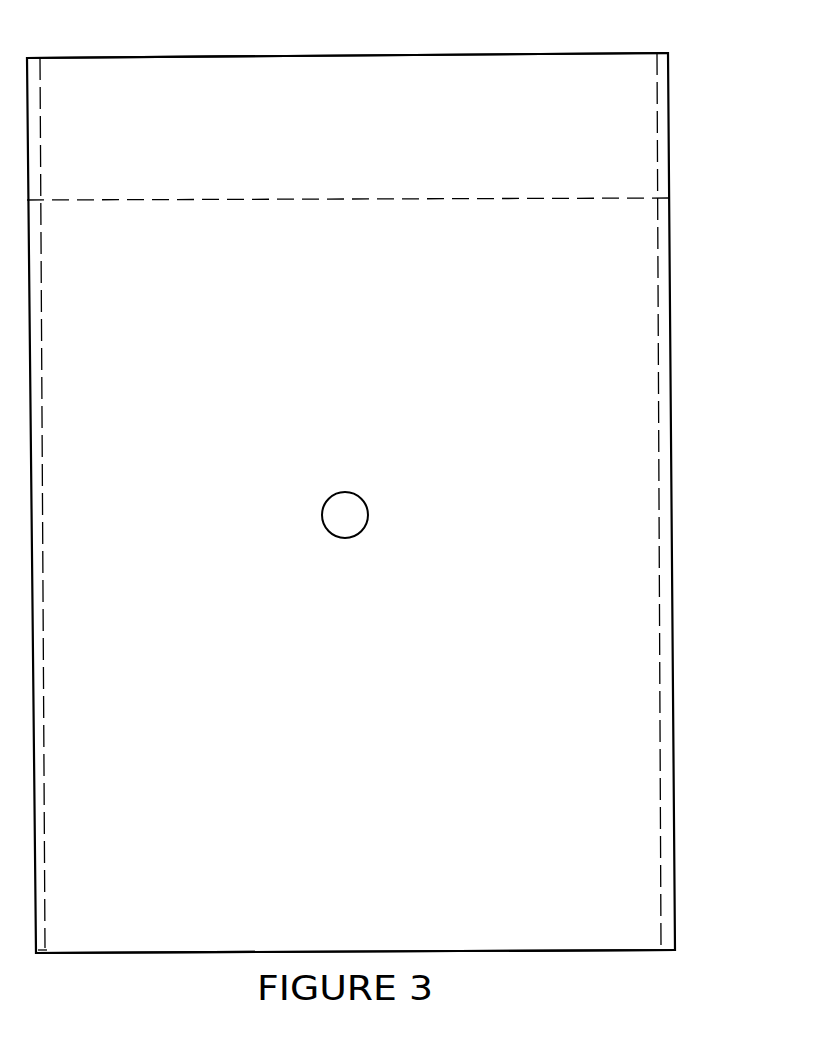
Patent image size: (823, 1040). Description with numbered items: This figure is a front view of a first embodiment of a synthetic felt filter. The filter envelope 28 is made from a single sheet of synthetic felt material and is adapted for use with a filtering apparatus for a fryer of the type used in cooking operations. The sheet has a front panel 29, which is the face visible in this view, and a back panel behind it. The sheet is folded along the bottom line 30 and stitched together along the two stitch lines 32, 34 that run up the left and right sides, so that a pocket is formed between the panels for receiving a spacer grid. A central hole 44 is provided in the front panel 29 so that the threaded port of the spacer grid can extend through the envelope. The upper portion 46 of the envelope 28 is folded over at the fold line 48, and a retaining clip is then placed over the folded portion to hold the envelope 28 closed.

The filter envelope 28 is at (688, 437).
The front panel 29 is at (480, 767).
The bottom line 30 is at (128, 955).
The stitch line 32 is at (47, 532).
The stitch line 34 is at (657, 347).
The central hole 44 is at (370, 505).
The upper portion 46 is at (492, 80).
The fold line 48 is at (204, 198).